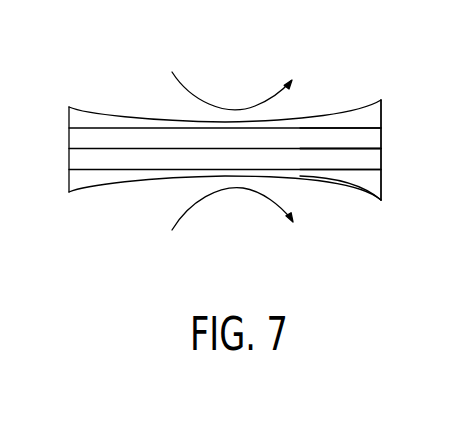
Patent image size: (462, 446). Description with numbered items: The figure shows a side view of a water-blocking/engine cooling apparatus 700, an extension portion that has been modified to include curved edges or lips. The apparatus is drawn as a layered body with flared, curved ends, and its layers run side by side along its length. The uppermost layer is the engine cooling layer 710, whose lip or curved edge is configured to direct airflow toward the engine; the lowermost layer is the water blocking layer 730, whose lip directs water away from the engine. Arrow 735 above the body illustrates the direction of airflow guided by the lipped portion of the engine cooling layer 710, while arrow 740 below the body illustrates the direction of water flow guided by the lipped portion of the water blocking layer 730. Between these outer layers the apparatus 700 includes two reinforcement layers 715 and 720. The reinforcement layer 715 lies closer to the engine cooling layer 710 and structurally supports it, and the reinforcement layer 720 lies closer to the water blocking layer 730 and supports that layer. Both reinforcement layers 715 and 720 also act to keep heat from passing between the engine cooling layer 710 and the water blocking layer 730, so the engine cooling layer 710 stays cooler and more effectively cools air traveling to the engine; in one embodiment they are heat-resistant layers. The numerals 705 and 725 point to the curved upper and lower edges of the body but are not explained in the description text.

The water-blocking/engine cooling apparatus 700 is at (330, 92).
The upper surface 705 is at (135, 106).
The engine cooling layer 710 is at (370, 110).
The reinforcement layer 715 is at (360, 139).
The reinforcement layer 720 is at (360, 160).
The lower surface 725 is at (155, 185).
The water blocking layer 730 is at (358, 180).
The arrow 735 is at (193, 96).
The arrow 740 is at (258, 192).